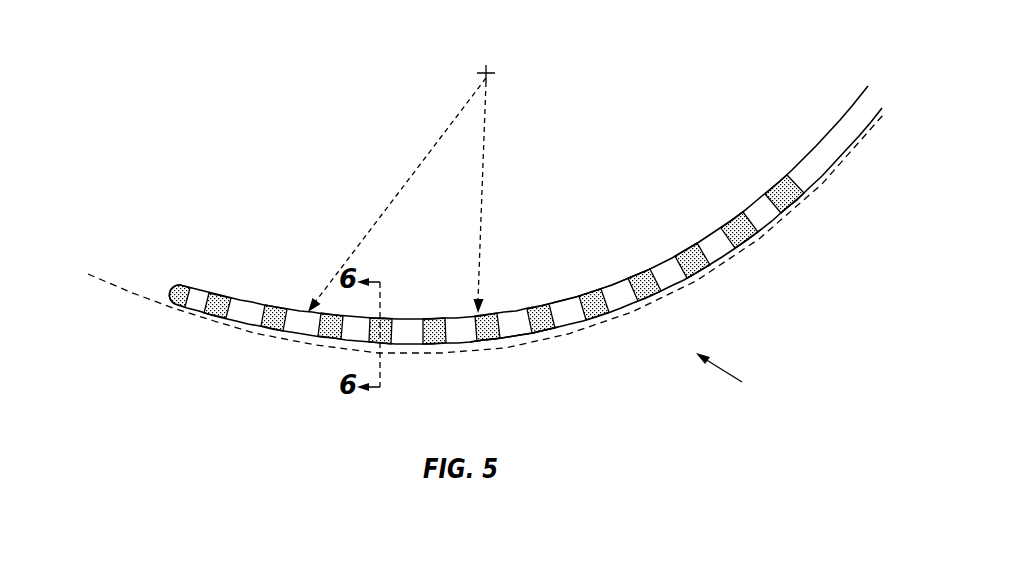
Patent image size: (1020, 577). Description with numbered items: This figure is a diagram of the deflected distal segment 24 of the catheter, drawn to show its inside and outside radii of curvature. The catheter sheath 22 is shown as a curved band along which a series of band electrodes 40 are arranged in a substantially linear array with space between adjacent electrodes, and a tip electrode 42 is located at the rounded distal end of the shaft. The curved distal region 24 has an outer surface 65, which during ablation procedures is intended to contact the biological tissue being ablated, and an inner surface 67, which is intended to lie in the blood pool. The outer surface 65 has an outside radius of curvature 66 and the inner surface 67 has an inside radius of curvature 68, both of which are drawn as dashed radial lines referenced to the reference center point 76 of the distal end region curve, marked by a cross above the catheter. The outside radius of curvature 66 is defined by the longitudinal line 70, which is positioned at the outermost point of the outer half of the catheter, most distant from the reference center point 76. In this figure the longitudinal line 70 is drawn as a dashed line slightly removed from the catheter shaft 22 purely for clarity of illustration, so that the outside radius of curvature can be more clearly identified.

The catheter sheath 22 is at (843, 155).
The distal segment 24 is at (735, 377).
The band electrodes 40 is at (260, 328).
The tip electrode 42 is at (178, 300).
The outer surface 65 is at (528, 336).
The outside radius of curvature 66 is at (487, 240).
The inner surface 67 is at (616, 282).
The inside radius of curvature 68 is at (413, 176).
The longitudinal line 70 is at (113, 285).
The reference center point 76 is at (492, 71).